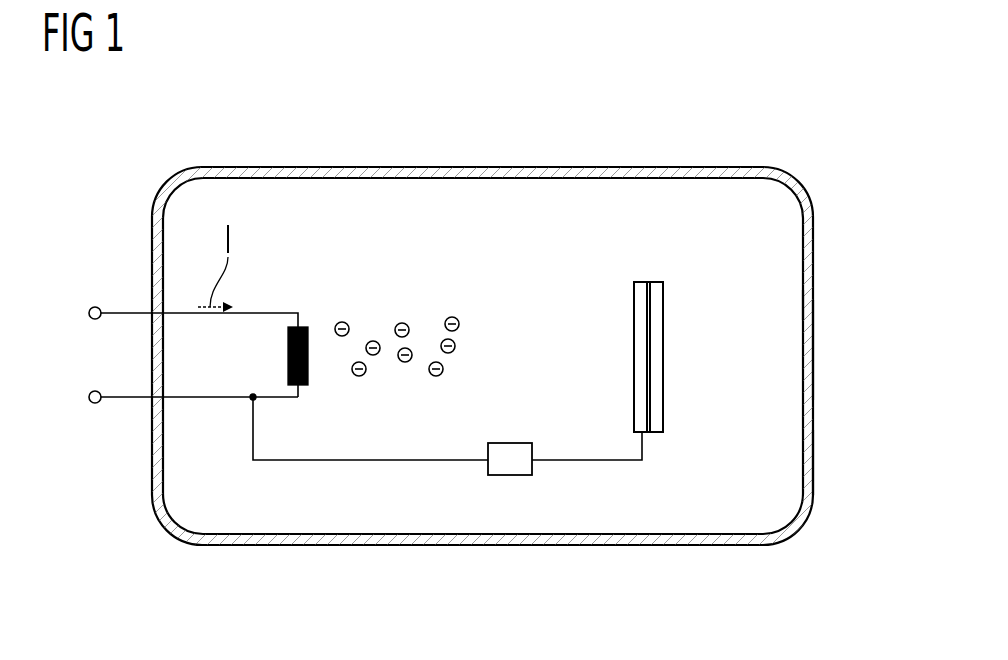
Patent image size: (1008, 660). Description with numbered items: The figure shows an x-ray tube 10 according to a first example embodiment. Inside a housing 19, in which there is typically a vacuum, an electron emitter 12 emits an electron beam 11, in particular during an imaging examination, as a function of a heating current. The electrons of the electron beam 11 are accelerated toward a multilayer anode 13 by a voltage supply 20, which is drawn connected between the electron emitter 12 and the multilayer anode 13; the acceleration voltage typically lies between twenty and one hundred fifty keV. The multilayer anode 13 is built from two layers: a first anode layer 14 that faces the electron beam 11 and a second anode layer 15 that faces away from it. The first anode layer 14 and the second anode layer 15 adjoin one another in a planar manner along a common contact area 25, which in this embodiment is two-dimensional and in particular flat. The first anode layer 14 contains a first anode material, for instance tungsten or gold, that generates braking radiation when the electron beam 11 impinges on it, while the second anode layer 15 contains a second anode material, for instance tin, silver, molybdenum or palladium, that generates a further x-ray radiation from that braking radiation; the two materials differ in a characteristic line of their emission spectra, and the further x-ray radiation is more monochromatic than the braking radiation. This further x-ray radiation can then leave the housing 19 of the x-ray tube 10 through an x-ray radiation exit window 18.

The x-ray tube 10 is at (113, 188).
The electron beam 11 is at (375, 304).
The electron emitter 12 is at (202, 397).
The multilayer anode 13 is at (646, 273).
The first anode layer 14 is at (640, 335).
The second anode layer 15 is at (656, 390).
The x-ray radiation exit window 18 is at (808, 353).
The housing 19 is at (813, 470).
The voltage supply 20 is at (503, 476).
The contact area 25 is at (650, 312).